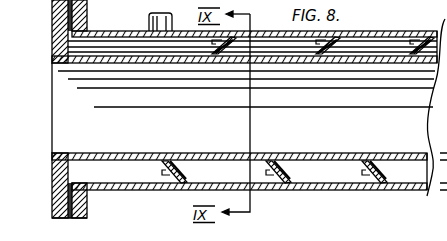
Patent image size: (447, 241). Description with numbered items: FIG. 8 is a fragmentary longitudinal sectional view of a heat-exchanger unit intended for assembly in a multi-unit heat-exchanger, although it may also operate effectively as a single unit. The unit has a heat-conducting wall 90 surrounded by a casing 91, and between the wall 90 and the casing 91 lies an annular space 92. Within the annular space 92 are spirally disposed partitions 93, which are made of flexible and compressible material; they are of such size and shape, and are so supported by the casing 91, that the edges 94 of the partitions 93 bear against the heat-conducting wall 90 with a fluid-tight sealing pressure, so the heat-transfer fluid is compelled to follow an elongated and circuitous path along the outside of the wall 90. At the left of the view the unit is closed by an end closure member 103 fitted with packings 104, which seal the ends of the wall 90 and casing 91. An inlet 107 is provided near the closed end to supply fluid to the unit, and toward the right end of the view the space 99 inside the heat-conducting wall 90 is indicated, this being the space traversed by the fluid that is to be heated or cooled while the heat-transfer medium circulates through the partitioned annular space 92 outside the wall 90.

The heat-conducting wall 90 is at (93, 153).
The casing 91 is at (132, 191).
The annular space 92 is at (108, 173).
The partitions 93 is at (180, 158).
The edges 94 is at (266, 158).
The annular space 99 is at (434, 185).
The end closure member 103 is at (55, 13).
The packing 104 is at (56, 204).
The inlet 107 is at (153, 23).